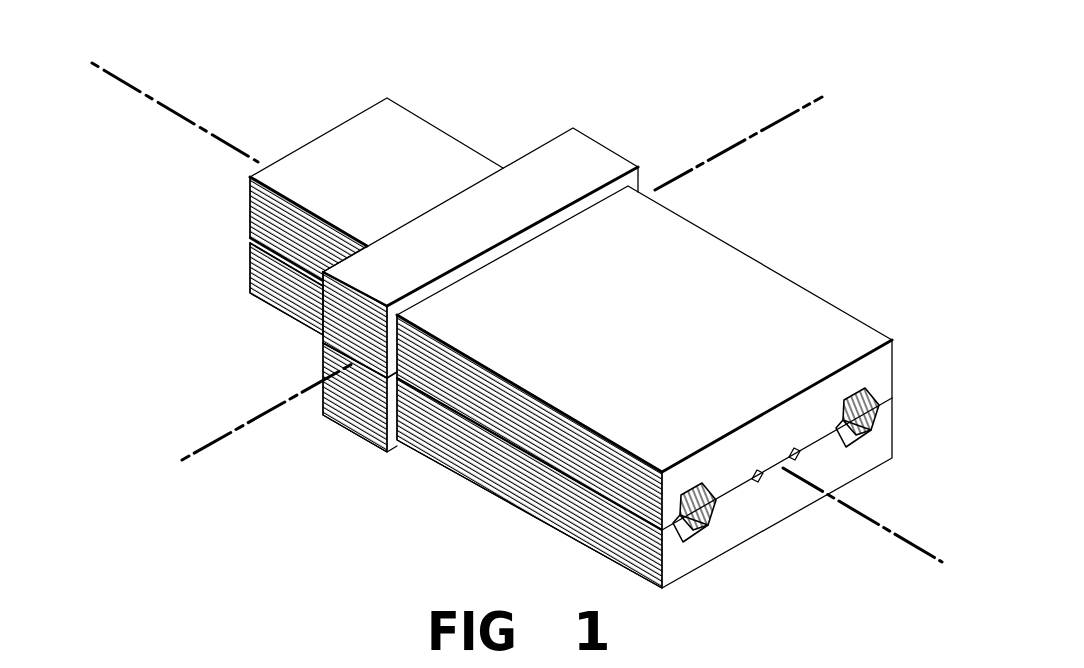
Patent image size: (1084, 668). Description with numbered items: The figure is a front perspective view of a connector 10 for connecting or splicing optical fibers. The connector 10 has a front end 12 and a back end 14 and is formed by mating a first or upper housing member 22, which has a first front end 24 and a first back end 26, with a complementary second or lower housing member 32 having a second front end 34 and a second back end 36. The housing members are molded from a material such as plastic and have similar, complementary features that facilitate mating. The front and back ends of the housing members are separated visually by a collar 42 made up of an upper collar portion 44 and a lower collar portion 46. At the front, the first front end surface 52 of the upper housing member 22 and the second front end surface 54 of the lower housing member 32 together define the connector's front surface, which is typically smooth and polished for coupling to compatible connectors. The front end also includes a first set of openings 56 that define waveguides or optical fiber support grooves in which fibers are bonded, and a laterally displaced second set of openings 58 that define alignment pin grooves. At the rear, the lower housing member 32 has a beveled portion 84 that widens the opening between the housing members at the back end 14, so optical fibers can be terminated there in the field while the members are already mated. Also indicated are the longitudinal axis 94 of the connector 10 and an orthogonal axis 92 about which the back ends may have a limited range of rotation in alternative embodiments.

The connector 10 is at (527, 301).
The front end 12 is at (679, 393).
The back end 14 is at (338, 207).
The upper housing member 22 is at (679, 358).
The first front end 24 is at (790, 291).
The first back end 26 is at (441, 137).
The lower housing member 32 is at (679, 483).
The second front end 34 is at (544, 519).
The second back end 36 is at (292, 307).
The collar 42 is at (497, 232).
The upper collar portion 44 is at (618, 160).
The lower collar portion 46 is at (353, 436).
The first front end surface 52 is at (880, 363).
The second front end surface 54 is at (880, 441).
The first set of openings 56 is at (793, 452).
The second set of openings 58 is at (837, 403).
The beveled portion 84 is at (280, 258).
The axis 92 is at (235, 422).
The longitudinal axis 94 is at (152, 95).